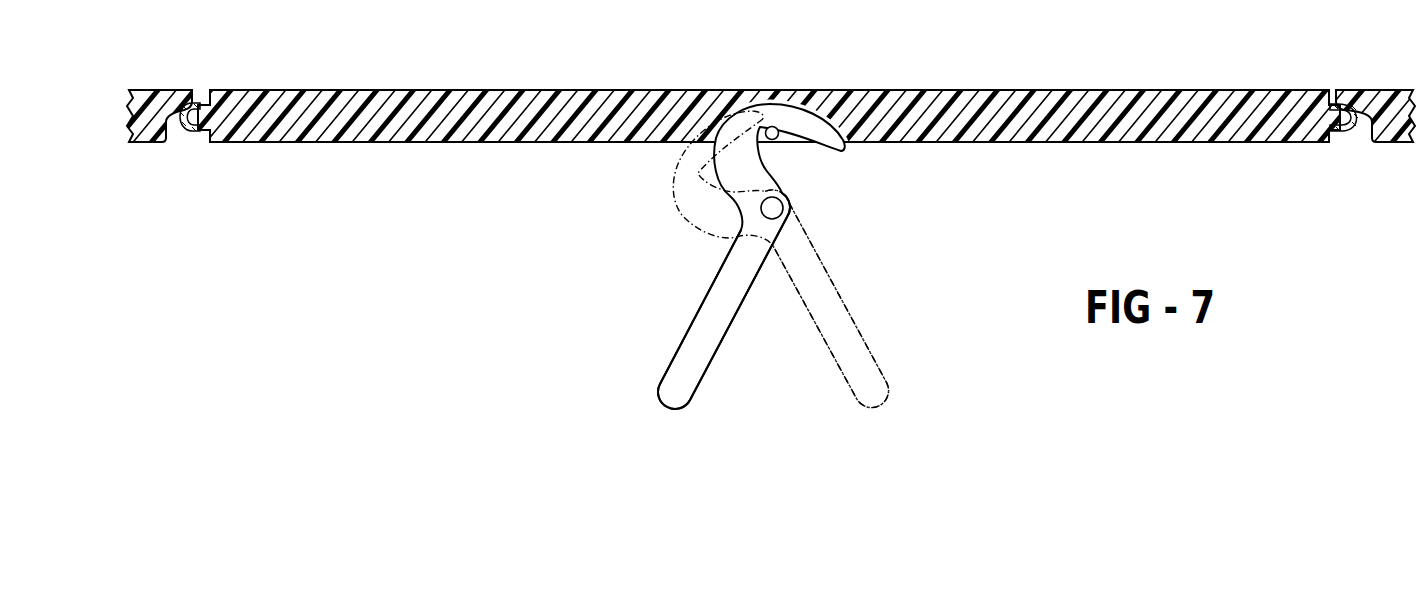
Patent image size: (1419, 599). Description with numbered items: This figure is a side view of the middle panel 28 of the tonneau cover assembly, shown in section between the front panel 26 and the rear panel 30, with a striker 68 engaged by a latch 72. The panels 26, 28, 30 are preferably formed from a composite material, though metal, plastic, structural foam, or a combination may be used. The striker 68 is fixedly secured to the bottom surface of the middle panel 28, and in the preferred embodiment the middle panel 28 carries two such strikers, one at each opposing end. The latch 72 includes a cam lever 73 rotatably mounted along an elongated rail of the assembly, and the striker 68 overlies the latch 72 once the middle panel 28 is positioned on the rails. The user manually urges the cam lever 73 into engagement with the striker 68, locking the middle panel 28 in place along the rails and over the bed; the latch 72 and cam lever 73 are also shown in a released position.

The front panel 26 is at (157, 90).
The middle panel 28 is at (985, 90).
The rear panel 30 is at (1373, 90).
The striker 68 is at (774, 140).
The latch 72 is at (672, 344).
The cam lever 73 is at (802, 123).